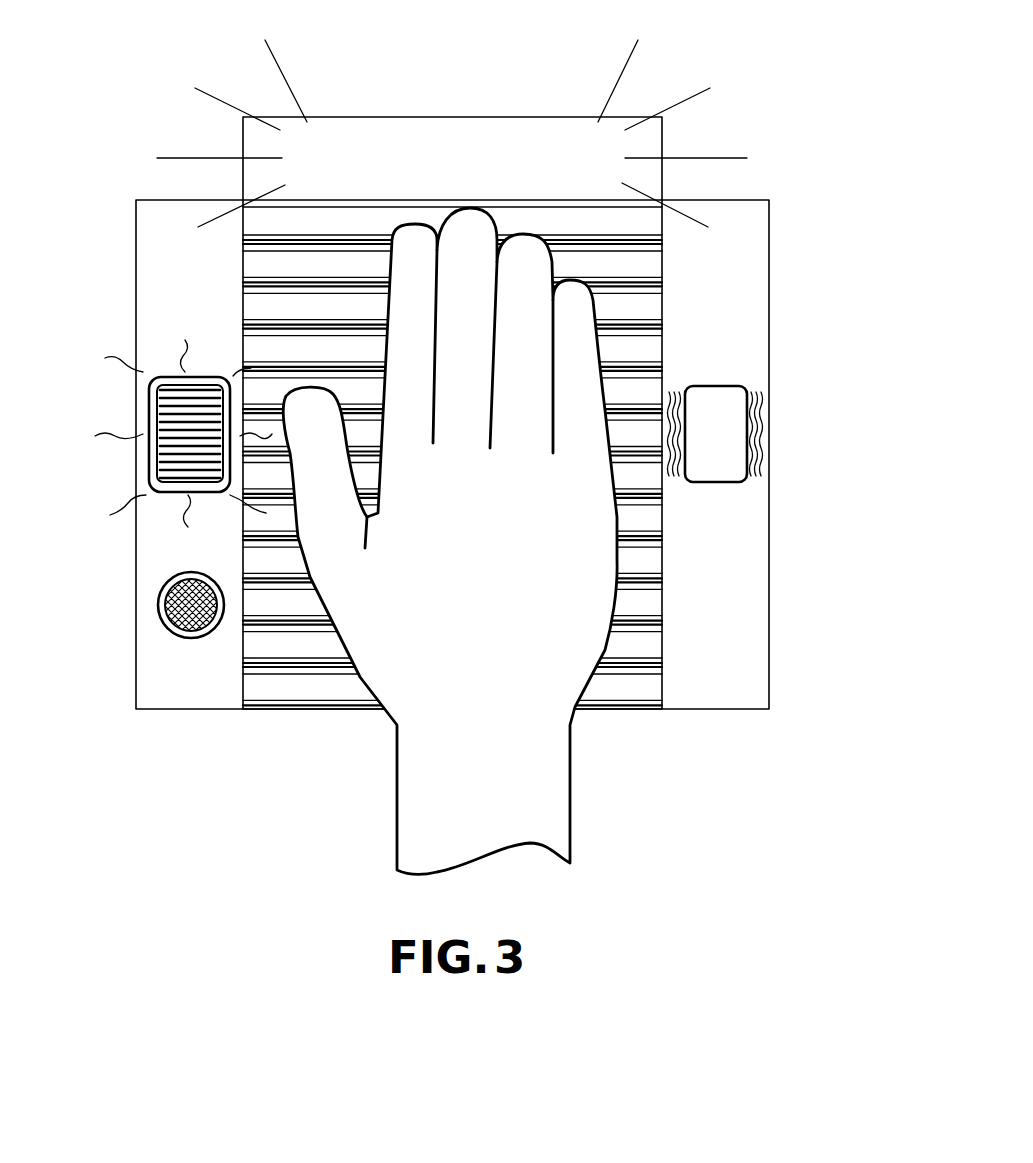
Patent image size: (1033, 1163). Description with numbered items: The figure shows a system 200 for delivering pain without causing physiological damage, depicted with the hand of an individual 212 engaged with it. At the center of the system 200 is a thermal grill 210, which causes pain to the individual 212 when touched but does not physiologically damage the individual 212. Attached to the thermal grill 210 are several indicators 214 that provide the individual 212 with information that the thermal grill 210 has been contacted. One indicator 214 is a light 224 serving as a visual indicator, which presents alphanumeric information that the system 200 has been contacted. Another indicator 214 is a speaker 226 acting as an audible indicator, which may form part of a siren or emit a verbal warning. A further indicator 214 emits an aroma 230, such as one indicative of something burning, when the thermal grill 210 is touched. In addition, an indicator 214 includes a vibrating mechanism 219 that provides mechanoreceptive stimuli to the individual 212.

The system 200 is at (770, 78).
The thermal grill 210 is at (685, 273).
The individual 212 is at (545, 800).
The indicator 214 is at (451, 118).
The vibrating mechanism 219 is at (747, 432).
The light 224 is at (525, 138).
The speaker 226 is at (157, 598).
The aroma 230 is at (130, 437).